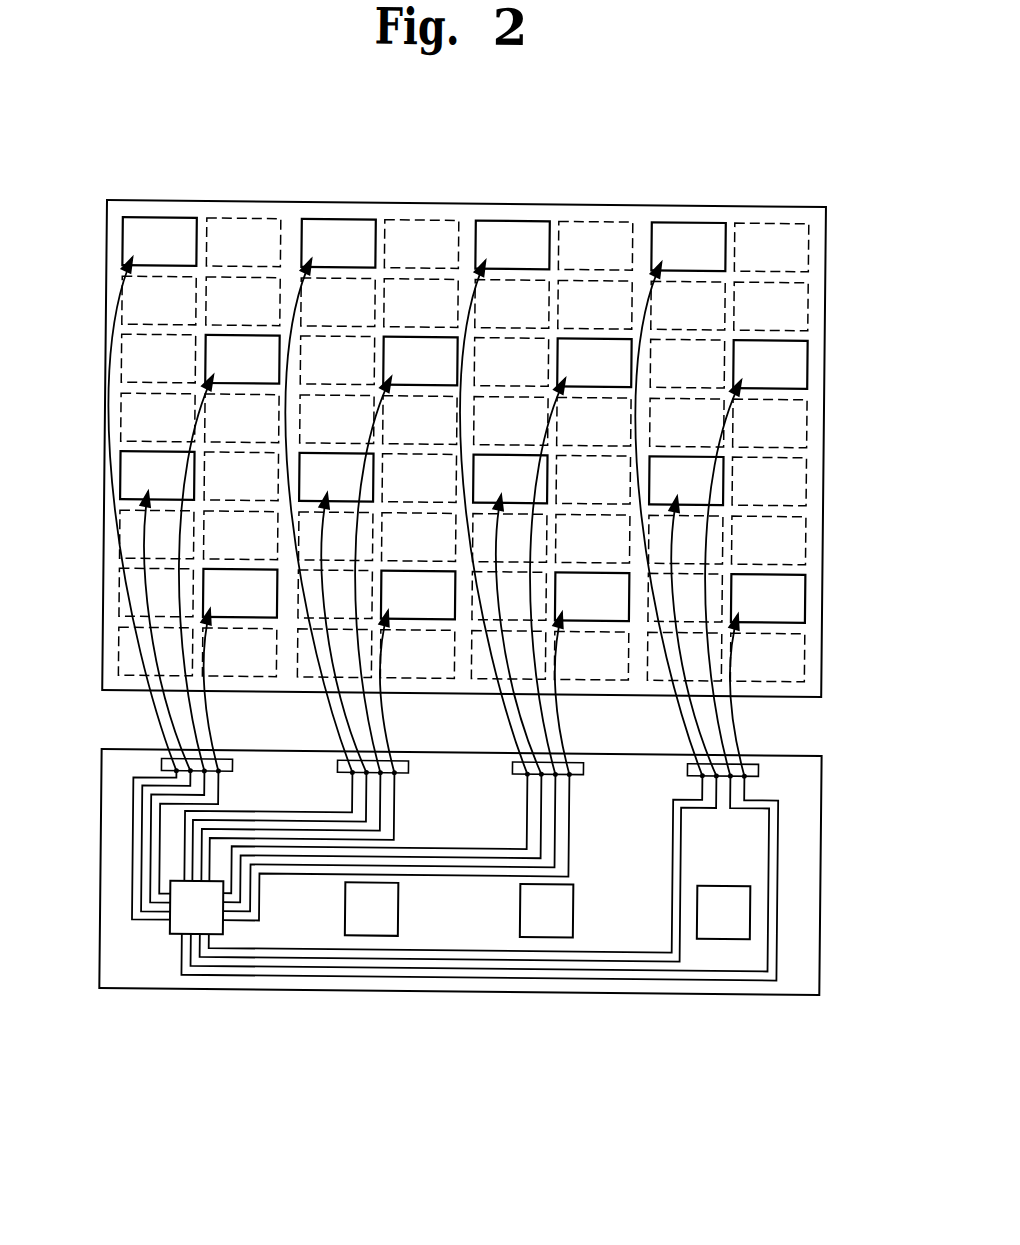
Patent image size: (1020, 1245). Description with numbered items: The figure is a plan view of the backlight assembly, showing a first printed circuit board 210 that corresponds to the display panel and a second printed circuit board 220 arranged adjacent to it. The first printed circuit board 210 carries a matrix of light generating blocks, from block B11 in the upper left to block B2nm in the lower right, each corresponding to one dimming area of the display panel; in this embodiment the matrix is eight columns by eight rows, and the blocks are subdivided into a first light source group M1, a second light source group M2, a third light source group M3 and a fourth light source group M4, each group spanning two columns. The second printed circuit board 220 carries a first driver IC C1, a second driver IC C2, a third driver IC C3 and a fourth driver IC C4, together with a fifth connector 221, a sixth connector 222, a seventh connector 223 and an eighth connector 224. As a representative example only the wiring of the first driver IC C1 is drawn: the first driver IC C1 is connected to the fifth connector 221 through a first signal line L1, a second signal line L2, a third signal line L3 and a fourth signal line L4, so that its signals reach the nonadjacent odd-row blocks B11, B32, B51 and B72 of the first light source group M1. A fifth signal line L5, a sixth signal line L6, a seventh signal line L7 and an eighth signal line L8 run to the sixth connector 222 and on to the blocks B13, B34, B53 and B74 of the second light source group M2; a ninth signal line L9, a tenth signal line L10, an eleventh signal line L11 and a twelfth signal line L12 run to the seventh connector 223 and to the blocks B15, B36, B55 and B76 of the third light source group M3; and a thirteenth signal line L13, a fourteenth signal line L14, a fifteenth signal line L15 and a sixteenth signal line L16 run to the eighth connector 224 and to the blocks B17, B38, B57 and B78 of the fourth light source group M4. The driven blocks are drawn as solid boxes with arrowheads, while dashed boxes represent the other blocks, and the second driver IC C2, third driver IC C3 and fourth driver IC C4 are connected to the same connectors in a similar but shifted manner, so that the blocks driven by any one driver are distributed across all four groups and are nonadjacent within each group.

The first printed circuit board 210 is at (826, 528).
The second printed circuit board 220 is at (827, 858).
The fifth connector 221 is at (172, 760).
The sixth connector 222 is at (405, 760).
The seventh connector 223 is at (582, 760).
The eighth connector 224 is at (757, 760).
The light generating block B11 is at (159, 241).
The light generating block B13 is at (338, 243).
The light generating block B15 is at (512, 245).
The light generating block B17 is at (688, 246).
The light generating block B32 is at (242, 359).
The light generating block B34 is at (420, 361).
The light generating block B36 is at (594, 362).
The light generating block B38 is at (770, 364).
The light generating block B51 is at (157, 475).
The light generating block B53 is at (336, 477).
The light generating block B55 is at (510, 479).
The light generating block B57 is at (686, 480).
The light generating block B72 is at (240, 593).
The light generating block B74 is at (418, 595).
The light generating block B76 is at (592, 596).
The light generating block B78 is at (768, 598).
The light generating block B2nm is at (809, 641).
The first light source group M1 is at (281, 191).
The second light source group M2 is at (459, 191).
The third light source group M3 is at (633, 191).
The fourth light source group M4 is at (809, 191).
The first driver IC C1 is at (185, 938).
The second driver IC C2 is at (405, 905).
The third driver IC C3 is at (580, 903).
The fourth driver IC C4 is at (733, 880).
The first signal line L1 is at (139, 796).
The second signal line L2 is at (148, 833).
The third signal line L3 is at (157, 870).
The fourth signal line L4 is at (166, 897).
The fifth signal line L5 is at (248, 810).
The sixth signal line L6 is at (267, 819).
The seventh signal line L7 is at (300, 828).
The eighth signal line L8 is at (308, 837).
The ninth signal line L9 is at (436, 845).
The tenth signal line L10 is at (488, 854).
The eleventh signal line L11 is at (561, 793).
The twelfth signal line L12 is at (575, 837).
The thirteenth signal line L13 is at (263, 974).
The fourteenth signal line L14 is at (311, 965).
The fifteenth signal line L15 is at (363, 956).
The sixteenth signal line L16 is at (421, 947).